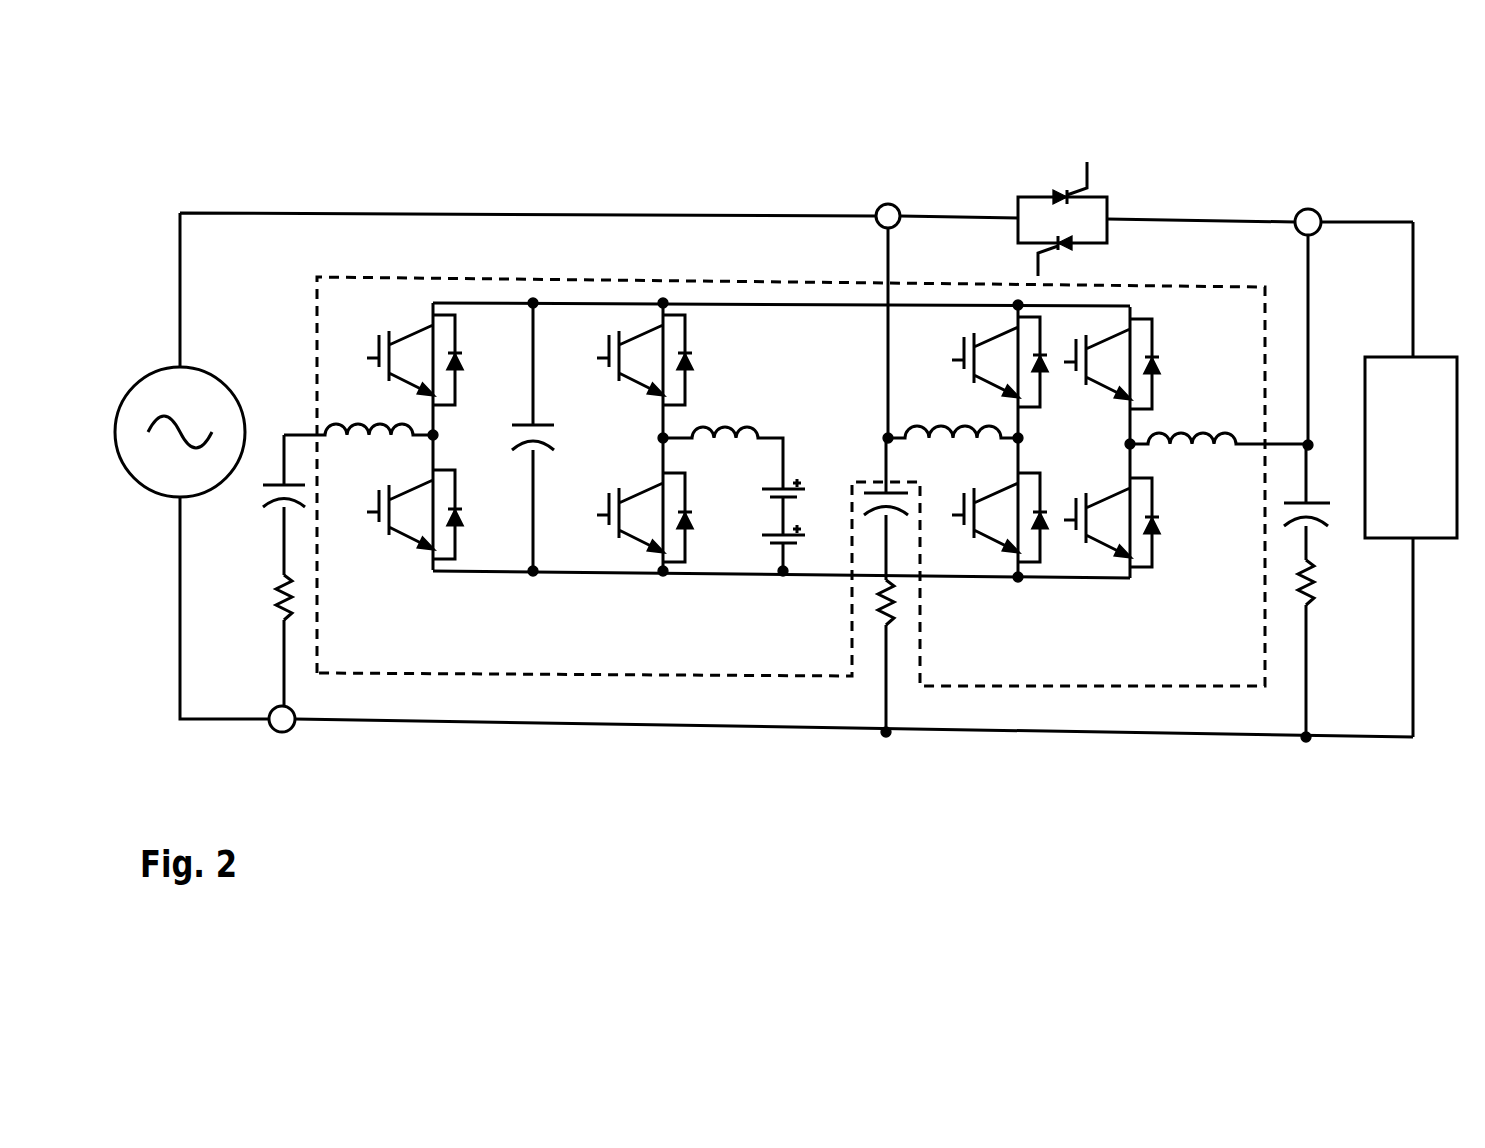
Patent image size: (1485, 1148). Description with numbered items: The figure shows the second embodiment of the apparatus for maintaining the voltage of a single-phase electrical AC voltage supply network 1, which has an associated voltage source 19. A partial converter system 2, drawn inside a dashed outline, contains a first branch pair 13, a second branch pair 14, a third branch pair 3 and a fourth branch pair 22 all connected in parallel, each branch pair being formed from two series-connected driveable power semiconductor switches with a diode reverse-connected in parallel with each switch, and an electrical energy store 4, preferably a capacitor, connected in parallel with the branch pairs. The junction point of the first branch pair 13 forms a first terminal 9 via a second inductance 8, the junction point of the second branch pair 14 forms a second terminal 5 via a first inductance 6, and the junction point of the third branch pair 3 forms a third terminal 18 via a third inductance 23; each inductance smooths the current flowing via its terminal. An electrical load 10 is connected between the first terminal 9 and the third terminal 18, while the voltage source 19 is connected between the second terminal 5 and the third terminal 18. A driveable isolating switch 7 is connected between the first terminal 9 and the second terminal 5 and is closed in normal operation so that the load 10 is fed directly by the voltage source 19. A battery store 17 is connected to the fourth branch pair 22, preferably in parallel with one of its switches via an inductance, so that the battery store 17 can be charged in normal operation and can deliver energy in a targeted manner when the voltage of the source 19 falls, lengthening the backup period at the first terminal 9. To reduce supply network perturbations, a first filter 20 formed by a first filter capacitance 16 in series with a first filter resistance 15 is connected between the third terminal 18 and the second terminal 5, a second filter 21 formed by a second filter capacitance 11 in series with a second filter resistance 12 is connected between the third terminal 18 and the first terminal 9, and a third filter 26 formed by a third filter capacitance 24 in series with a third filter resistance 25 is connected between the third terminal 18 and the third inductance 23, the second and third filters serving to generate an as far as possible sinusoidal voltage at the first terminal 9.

The electrical AC voltage supply network 1 is at (206, 352).
The partial converter system 2 is at (315, 373).
The third branch pair 3 is at (456, 348).
The electrical energy store 4 is at (545, 423).
The second terminal 5 is at (897, 205).
The first inductance 6 is at (917, 437).
The isolating switch 7 is at (1043, 195).
The second inductance 8 is at (1203, 435).
The first terminal 9 is at (1300, 208).
The electrical load 10 is at (1390, 357).
The second filter capacitance 11 is at (1349, 640).
The second filter resistance 12 is at (1292, 555).
The first branch pair 13 is at (1131, 570).
The second branch pair 14 is at (1043, 430).
The first filter resistance 15 is at (916, 702).
The first filter capacitance 16 is at (930, 631).
The battery store 17 is at (757, 512).
The third terminal 18 is at (290, 732).
The voltage source 19 is at (148, 490).
The first filter 20 is at (885, 631).
The second filter 21 is at (1314, 640).
The fourth branch pair 22 is at (656, 558).
The third inductance 23 is at (342, 426).
The third filter capacitance 24 is at (303, 505).
The third filter resistance 25 is at (295, 612).
The third filter 26 is at (352, 629).